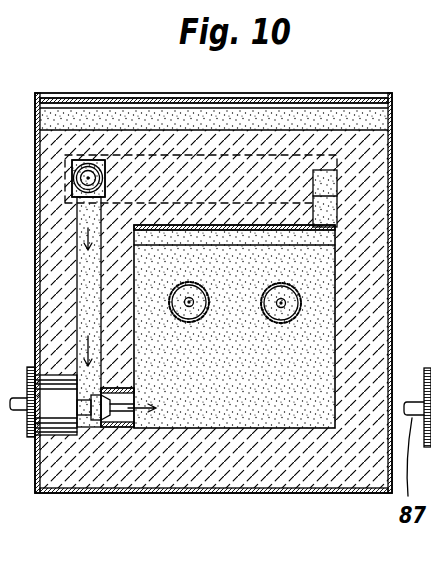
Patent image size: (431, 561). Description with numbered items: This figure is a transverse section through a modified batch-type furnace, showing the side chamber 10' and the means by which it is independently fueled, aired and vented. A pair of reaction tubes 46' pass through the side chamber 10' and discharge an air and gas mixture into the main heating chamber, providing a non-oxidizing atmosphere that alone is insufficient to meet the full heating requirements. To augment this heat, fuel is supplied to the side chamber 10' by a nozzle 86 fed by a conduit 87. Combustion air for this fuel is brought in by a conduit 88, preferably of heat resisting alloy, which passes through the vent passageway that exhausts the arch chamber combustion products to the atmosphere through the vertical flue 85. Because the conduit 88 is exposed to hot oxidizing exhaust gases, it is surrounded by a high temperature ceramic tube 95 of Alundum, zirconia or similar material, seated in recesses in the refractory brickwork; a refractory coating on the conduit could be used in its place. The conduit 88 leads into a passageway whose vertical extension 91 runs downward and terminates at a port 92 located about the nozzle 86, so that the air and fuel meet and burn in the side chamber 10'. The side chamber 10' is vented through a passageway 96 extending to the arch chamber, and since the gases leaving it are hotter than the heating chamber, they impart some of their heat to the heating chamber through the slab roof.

The vertical flue 85 is at (88, 160).
The conduit 88 is at (90, 177).
The passageway 96 is at (322, 176).
The ceramic tube 95 is at (106, 182).
The vertical extension 91 is at (90, 280).
The reaction tubes 46' is at (235, 291).
The side chamber 10' is at (234, 326).
The port 92 is at (137, 394).
The conduit 87 is at (18, 412).
The nozzle 86 is at (94, 416).